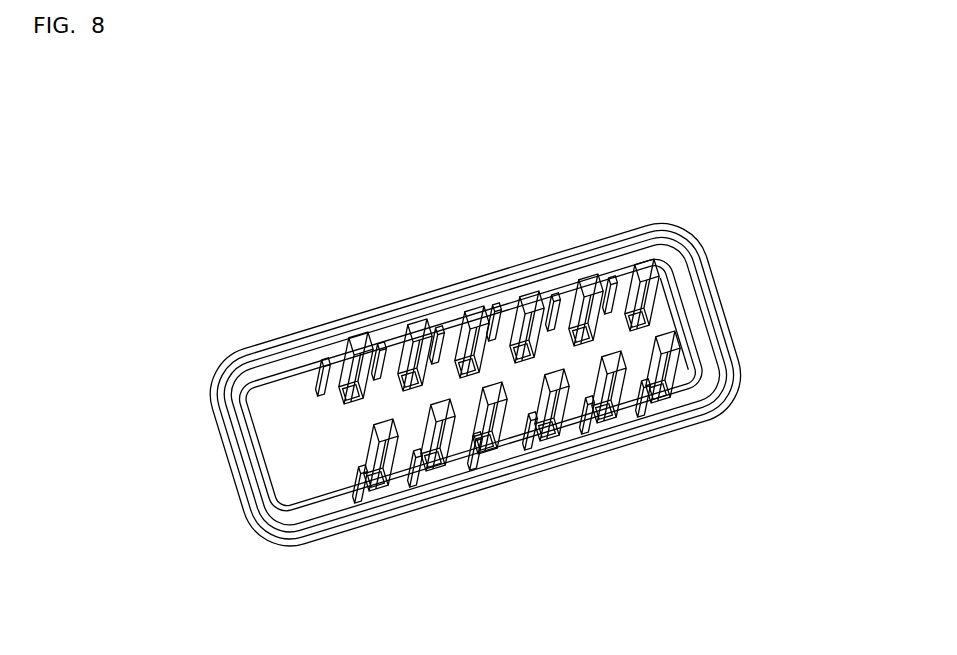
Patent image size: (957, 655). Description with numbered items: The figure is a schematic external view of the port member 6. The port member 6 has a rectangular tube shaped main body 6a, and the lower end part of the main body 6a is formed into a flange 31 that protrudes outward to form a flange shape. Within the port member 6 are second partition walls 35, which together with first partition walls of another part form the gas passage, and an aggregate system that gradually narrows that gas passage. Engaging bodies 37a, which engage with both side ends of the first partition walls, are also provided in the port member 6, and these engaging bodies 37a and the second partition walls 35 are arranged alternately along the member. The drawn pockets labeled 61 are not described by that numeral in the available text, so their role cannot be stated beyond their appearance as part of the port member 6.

The port member 6 is at (224, 340).
The main body 6a is at (262, 472).
The flange 31 is at (723, 303).
The second partition walls 35 is at (381, 351).
The engaging bodies 37a is at (556, 286).
The terminal holding pockets 61 is at (371, 424).